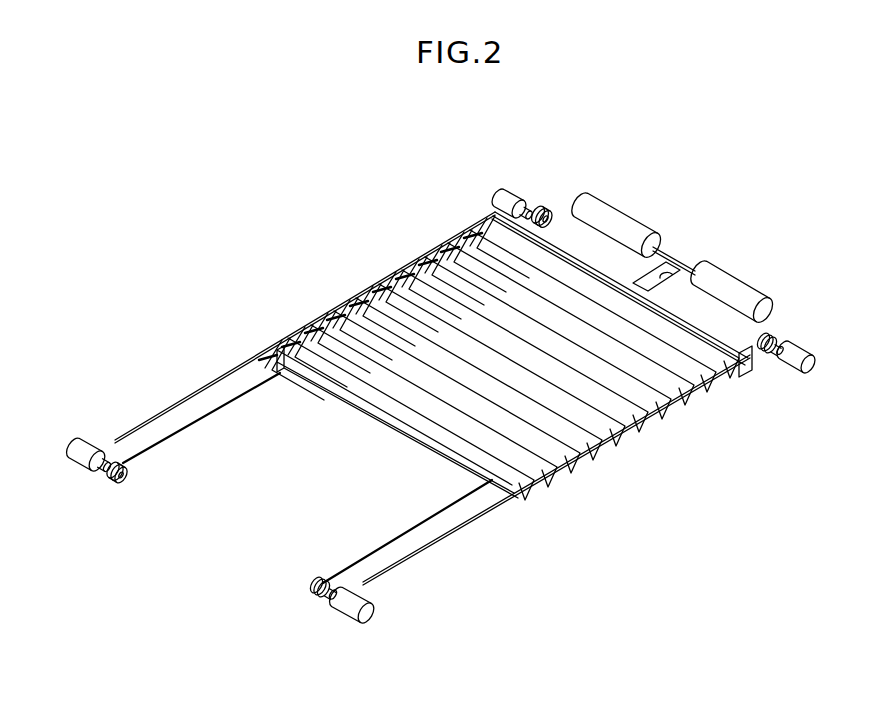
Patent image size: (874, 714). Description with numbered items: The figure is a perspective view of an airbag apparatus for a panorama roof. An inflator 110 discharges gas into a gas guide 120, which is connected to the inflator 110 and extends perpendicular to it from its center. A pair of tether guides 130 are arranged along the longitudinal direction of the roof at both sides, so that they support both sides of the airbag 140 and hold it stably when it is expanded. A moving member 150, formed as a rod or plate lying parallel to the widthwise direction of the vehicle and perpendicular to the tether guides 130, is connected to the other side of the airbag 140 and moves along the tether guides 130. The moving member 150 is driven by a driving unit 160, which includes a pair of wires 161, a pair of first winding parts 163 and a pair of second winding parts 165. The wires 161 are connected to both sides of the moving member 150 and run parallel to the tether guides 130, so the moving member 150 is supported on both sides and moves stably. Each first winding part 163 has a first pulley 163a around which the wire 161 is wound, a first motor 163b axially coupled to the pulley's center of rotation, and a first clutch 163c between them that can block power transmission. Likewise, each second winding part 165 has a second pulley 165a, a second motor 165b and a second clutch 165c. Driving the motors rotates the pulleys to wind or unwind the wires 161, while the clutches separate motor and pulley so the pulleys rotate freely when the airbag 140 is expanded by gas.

The inflator 110 is at (640, 230).
The gas guide 120 is at (680, 265).
The tether guides 130 is at (200, 390).
The airbag 140 is at (610, 402).
The moving member 150 is at (390, 423).
The driving unit 160 is at (633, 247).
The wires 161 is at (266, 382).
The first winding part 163 is at (669, 247).
The first pulley 163a is at (567, 197).
The first motor 163b is at (506, 193).
The first clutch 163c is at (531, 200).
The second winding part 165 is at (203, 545).
The second pulley 165a is at (115, 502).
The second motor 165b is at (73, 462).
The second clutch 165c is at (101, 474).